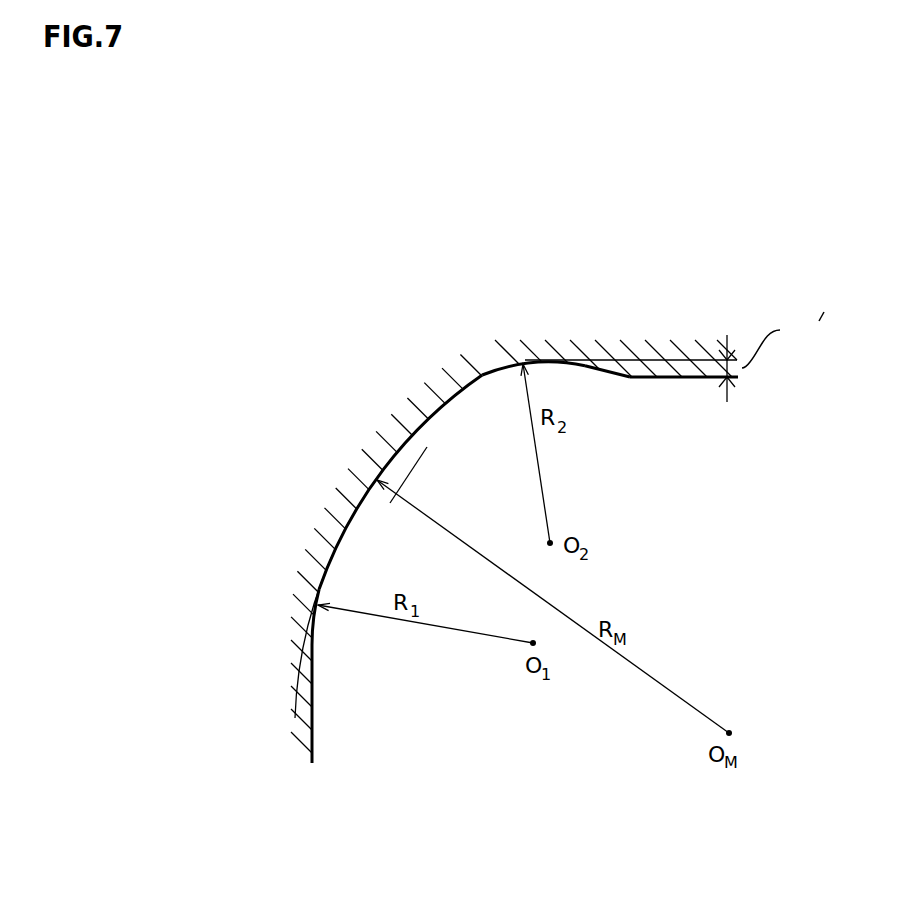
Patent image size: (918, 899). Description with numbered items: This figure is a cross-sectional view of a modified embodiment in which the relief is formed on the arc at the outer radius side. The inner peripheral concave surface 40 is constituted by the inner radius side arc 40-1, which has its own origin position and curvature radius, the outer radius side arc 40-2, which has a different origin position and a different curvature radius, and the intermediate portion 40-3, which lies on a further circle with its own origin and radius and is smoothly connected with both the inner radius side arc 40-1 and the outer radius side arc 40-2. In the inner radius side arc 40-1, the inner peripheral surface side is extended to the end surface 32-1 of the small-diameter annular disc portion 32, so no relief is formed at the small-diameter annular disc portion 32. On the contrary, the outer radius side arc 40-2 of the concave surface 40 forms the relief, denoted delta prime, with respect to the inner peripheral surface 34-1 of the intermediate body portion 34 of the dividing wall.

The small-diameter annular disc portion 32 is at (320, 701).
The end surface 32-1 is at (313, 710).
The intermediate body portion 34 is at (674, 370).
The inner peripheral surface 34-1 is at (672, 378).
The inner peripheral concave surface 40 is at (379, 525).
The inner radius side arc 40-1 is at (318, 578).
The outer radius side arc 40-2 is at (467, 367).
The intermediate portion 40-3 is at (384, 461).